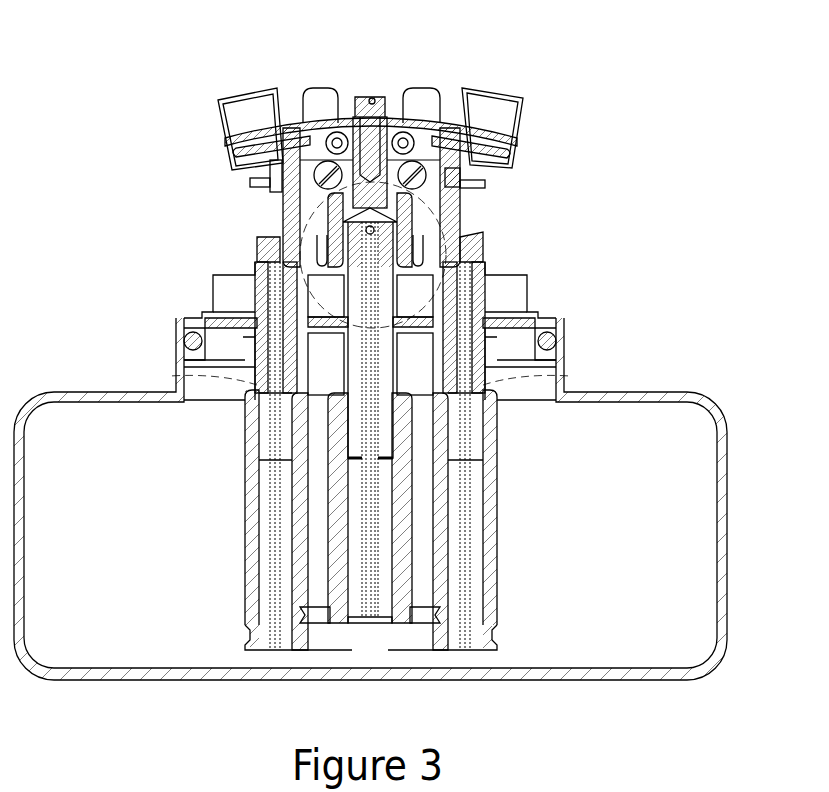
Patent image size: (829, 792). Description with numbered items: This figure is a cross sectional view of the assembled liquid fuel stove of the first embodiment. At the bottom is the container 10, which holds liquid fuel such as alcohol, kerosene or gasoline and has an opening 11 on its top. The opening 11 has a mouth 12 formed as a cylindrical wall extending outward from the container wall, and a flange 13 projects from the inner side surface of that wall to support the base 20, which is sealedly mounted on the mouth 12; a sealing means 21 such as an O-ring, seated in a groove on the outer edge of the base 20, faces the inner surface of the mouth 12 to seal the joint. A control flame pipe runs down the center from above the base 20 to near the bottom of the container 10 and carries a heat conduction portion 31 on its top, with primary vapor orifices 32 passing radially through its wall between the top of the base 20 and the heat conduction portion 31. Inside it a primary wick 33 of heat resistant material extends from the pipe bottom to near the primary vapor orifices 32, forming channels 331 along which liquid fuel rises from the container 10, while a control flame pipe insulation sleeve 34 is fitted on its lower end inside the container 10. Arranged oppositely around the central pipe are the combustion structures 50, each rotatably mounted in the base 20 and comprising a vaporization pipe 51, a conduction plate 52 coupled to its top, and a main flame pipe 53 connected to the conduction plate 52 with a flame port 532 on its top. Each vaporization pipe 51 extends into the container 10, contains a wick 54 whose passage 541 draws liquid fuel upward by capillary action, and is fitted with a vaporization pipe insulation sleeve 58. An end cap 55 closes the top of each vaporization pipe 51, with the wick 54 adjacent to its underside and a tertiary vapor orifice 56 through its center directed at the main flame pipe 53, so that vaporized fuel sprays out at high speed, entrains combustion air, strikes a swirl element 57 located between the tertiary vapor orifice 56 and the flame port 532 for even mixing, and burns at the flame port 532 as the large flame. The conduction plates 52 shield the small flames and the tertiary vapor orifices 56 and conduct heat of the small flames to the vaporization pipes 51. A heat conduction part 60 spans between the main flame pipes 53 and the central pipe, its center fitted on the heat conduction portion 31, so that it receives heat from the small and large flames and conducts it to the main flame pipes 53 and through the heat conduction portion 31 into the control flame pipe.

The container 10 is at (727, 502).
The opening 11 is at (517, 363).
The mouth 12 is at (178, 320).
The flange 13 is at (182, 353).
The base 20 is at (538, 312).
The sealing means 21 is at (552, 337).
The heat conduction portion 31 is at (358, 97).
The primary vapor orifices 32 is at (293, 212).
The primary wick 33 is at (372, 617).
The channels 331 is at (363, 617).
The control flame pipe insulation sleeve 34 is at (340, 620).
The combustion structures 50 is at (533, 127).
The vaporization pipes 51 is at (483, 380).
The conduction plates 52 is at (275, 203).
The main flame pipes 53 is at (223, 122).
The flame ports 532 is at (478, 97).
The wick 54 is at (470, 585).
The passage 541 is at (467, 612).
The end cap 55 is at (482, 233).
The tertiary vapor orifice 56 is at (468, 228).
The swirl element 57 is at (490, 97).
The vaporization pipe insulation sleeves 58 is at (487, 643).
The heat conduction part 60 is at (300, 124).